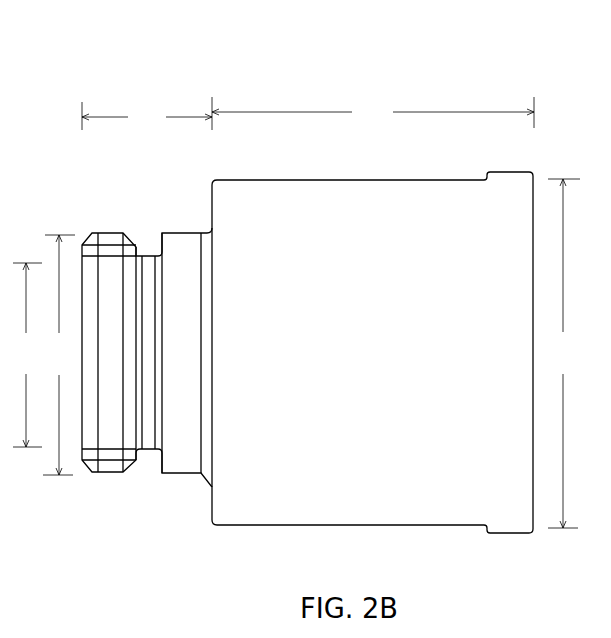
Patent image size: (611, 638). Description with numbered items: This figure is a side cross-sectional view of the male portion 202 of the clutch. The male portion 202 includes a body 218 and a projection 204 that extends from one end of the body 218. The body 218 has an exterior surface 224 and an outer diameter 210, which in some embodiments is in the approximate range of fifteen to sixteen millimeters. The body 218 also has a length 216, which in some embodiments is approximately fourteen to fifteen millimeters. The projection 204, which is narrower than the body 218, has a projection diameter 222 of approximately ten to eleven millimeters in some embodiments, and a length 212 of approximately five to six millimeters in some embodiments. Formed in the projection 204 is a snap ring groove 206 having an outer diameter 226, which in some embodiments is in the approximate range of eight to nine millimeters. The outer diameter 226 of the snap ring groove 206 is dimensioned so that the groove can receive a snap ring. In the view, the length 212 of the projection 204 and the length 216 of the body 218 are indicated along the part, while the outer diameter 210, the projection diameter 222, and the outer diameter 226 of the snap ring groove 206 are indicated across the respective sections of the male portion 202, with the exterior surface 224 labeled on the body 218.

The male portion 202 is at (303, 303).
The projection 204 is at (141, 404).
The snap ring groove 206 is at (111, 315).
The outer diameter 210 is at (564, 353).
The length 212 is at (147, 113).
The length 216 is at (373, 112).
The body 218 is at (468, 377).
The projection diameter 222 is at (59, 355).
The exterior surface 224 is at (347, 333).
The outer diameter 226 is at (27, 355).